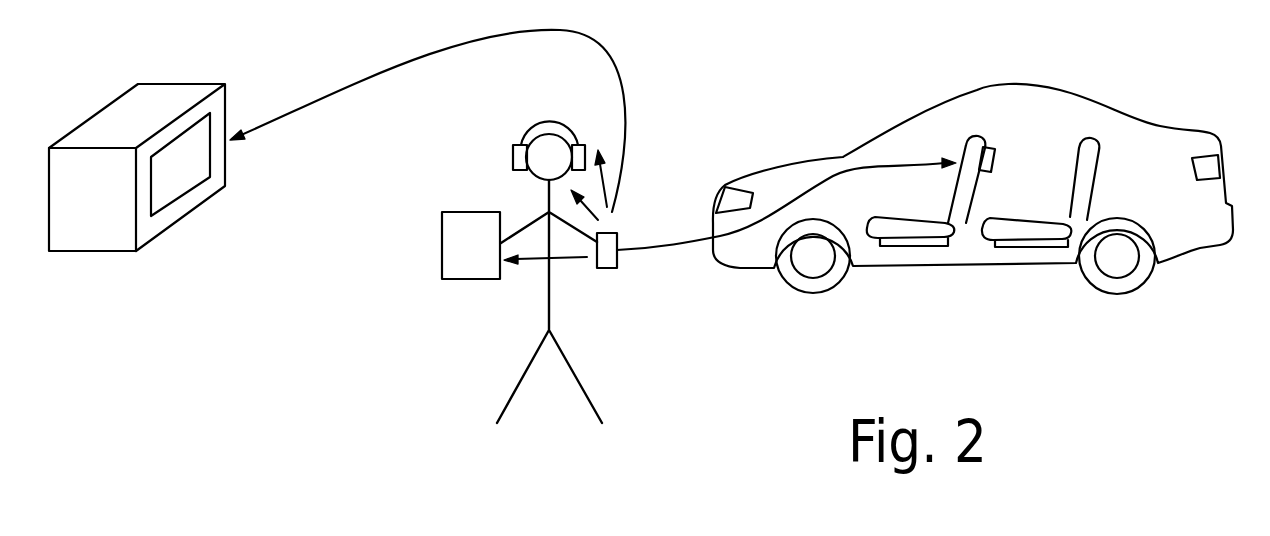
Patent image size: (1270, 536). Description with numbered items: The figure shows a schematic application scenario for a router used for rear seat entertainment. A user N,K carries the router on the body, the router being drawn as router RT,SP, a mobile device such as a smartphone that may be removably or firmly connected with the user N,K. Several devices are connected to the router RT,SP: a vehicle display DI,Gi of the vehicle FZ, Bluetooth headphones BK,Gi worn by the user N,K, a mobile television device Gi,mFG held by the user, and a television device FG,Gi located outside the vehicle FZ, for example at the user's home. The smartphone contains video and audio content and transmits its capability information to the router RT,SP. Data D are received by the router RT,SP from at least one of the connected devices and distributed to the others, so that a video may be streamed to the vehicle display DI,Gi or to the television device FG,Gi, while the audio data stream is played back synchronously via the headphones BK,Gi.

The television device FG,Gi is at (177, 220).
The mobile television device Gi,mFG is at (441, 238).
The Bluetooth headphones BK,Gi is at (513, 158).
The router / smartphone RT,SP is at (617, 233).
The user / body N,K is at (552, 297).
The data D is at (610, 60).
The vehicle FZ is at (1147, 121).
The vehicle display DI,Gi is at (992, 148).